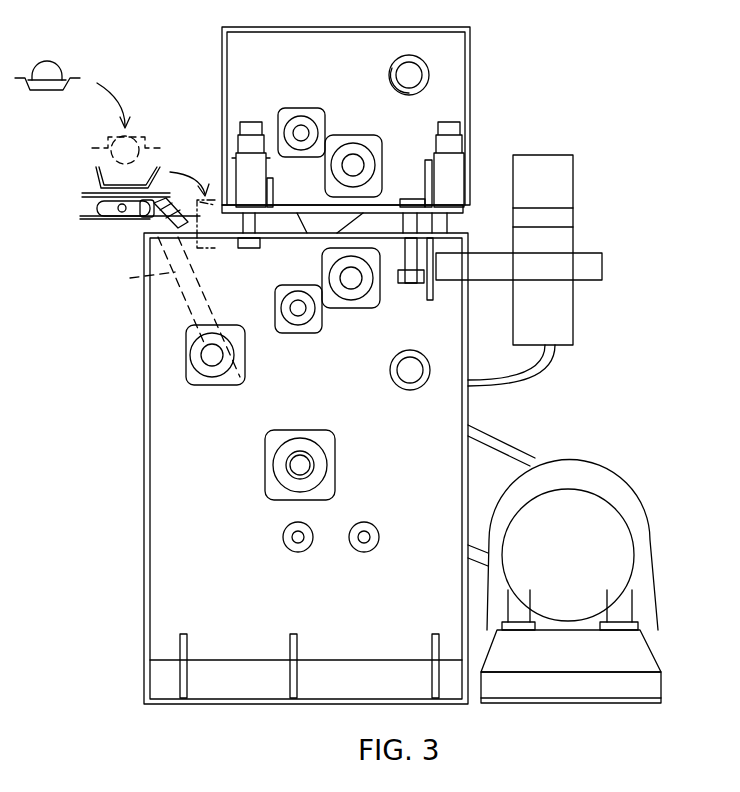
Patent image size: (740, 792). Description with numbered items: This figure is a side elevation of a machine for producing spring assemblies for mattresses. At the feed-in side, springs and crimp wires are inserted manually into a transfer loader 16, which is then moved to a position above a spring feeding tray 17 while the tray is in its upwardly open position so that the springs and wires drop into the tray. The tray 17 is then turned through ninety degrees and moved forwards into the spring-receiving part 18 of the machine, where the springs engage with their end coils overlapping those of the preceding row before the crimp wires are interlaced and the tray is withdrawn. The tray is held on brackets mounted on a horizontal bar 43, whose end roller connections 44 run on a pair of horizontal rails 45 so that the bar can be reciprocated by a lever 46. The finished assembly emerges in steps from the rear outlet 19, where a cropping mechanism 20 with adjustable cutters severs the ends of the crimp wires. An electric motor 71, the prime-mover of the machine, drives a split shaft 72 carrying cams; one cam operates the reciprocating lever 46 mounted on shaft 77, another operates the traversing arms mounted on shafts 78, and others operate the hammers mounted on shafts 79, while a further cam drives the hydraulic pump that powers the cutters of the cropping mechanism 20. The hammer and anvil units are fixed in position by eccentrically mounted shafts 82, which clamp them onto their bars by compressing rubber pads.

The transfer loader 16 is at (77, 76).
The spring feeding tray 17 is at (110, 187).
The spring-receiving part 18 is at (235, 222).
The rear outlet 19 is at (465, 217).
The cropping mechanism 20 is at (555, 188).
The horizontal bar 43 is at (119, 210).
The end roller connections 44 is at (142, 218).
The horizontal rails 45 is at (80, 216).
The reciprocating lever 46 is at (168, 307).
The electric motor 71 is at (572, 498).
The split shaft 72 is at (298, 465).
The shaft 77 is at (212, 355).
The shafts 78 is at (302, 133).
The shafts 79 is at (353, 165).
The eccentrically mounted shafts 82 is at (409, 80).